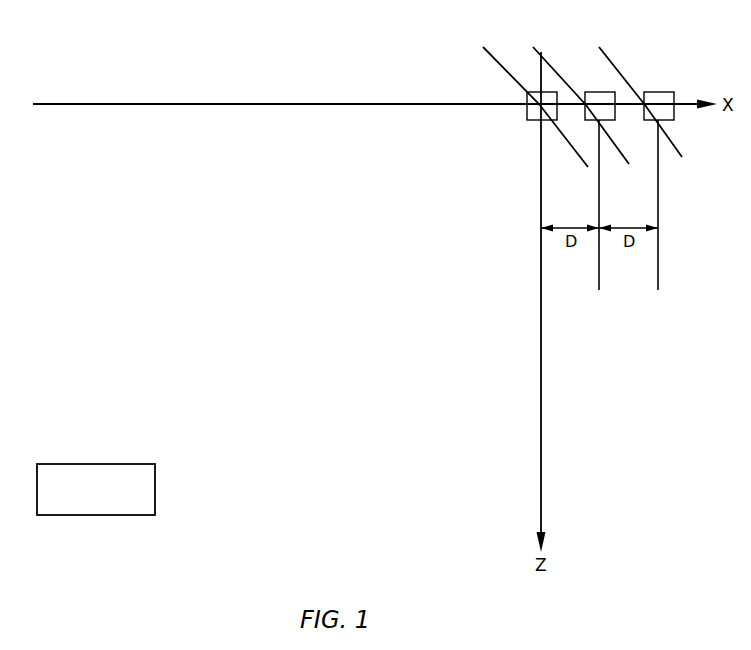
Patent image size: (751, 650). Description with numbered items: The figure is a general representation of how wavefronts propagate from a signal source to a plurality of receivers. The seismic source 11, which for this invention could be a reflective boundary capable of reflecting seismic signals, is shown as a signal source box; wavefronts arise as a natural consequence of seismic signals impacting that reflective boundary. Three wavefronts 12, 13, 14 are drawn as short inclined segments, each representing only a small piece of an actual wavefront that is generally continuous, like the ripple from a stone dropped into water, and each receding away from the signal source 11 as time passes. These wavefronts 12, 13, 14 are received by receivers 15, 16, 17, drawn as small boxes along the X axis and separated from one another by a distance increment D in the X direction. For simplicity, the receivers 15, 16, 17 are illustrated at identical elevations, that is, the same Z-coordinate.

The seismic source 11 is at (155, 490).
The wavefront 12 is at (500, 64).
The wavefront 13 is at (552, 67).
The wavefront 14 is at (617, 66).
The receiver 15 is at (527, 118).
The receiver 16 is at (588, 110).
The receiver 17 is at (648, 115).